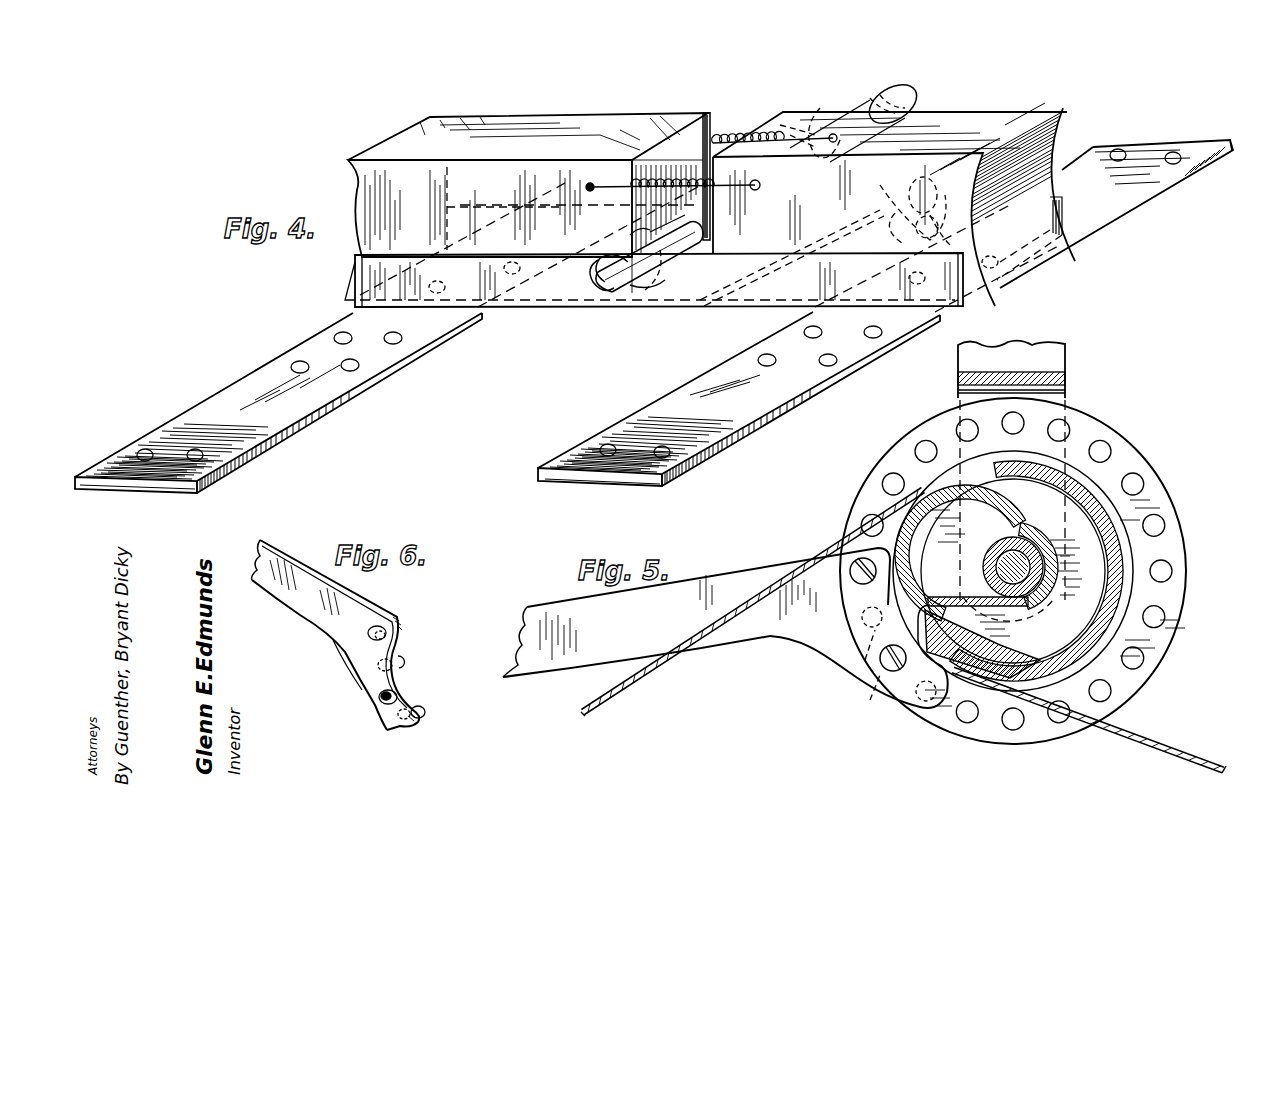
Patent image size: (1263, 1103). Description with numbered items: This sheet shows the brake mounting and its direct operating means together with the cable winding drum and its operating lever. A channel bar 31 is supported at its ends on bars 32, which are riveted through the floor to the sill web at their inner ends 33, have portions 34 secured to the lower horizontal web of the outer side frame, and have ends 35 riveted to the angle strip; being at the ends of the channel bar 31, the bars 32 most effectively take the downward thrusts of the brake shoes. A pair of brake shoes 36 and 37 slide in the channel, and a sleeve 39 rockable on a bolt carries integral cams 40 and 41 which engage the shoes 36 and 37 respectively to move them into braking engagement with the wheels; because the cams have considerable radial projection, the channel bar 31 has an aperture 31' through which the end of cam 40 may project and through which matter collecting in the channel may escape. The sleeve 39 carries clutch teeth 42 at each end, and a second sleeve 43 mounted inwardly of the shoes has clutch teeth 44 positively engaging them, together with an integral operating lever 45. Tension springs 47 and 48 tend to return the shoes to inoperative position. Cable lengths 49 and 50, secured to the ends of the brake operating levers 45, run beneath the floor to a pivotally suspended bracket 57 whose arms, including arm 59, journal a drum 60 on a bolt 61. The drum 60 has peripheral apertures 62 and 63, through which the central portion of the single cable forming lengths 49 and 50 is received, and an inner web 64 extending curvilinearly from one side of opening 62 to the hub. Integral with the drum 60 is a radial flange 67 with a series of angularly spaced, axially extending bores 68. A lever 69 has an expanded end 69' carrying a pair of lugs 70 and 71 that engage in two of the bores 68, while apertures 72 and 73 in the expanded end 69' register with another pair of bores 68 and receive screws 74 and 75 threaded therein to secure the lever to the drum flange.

In FIG. 4, the channel bar 31 is at (702, 254).
In FIG. 4, the aperture 31' is at (891, 270).
In FIG. 4, the bars 32 is at (368, 382).
In FIG. 4, the inner ends of bars 33 is at (1122, 145).
In FIG. 4, the portions of bars 34 is at (335, 352).
In FIG. 4, the ends of bars 35 is at (128, 458).
In FIG. 4, the brake shoe 36 is at (562, 120).
In FIG. 4, the brake shoe 37 is at (1017, 122).
In FIG. 4, the sleeve 39 is at (640, 248).
In FIG. 4, the cam 40 is at (672, 300).
In FIG. 4, the cam 41 is at (697, 168).
In FIG. 4, the clutch teeth 42 is at (612, 292).
In FIG. 4, the sleeve 43 is at (880, 92).
In FIG. 4, the clutch teeth 44 is at (816, 110).
In FIG. 4, the operating lever 45 is at (926, 181).
In FIG. 4, the tension spring 47 is at (640, 172).
In FIG. 4, the tension spring 48 is at (723, 140).
In FIG. 5, the cable length 49 is at (634, 682).
In FIG. 4, the cable length 50 is at (840, 244).
In FIG. 5, the cable length 50 is at (1165, 746).
In FIG. 5, the bracket 57 is at (1063, 367).
In FIG. 5, the arm 59 is at (962, 400).
In FIG. 5, the drum 60 is at (1087, 492).
In FIG. 5, the bolt 61 is at (1030, 600).
In FIG. 5, the peripheral aperture 62 is at (968, 470).
In FIG. 5, the peripheral aperture 63 is at (918, 598).
In FIG. 5, the inner web 64 is at (996, 503).
In FIG. 5, the radial flange 67 is at (1098, 422).
In FIG. 5, the bores 68 is at (1158, 520).
In FIG. 5, the lever 69 is at (696, 612).
In FIG. 6, the lever 69 is at (336, 635).
In FIG. 5, the expanded end 69' is at (861, 672).
In FIG. 6, the expanded end 69' is at (349, 685).
In FIG. 5, the lug 70 is at (858, 670).
In FIG. 6, the lug 70 is at (406, 658).
In FIG. 5, the lug 71 is at (924, 703).
In FIG. 6, the lug 71 is at (427, 710).
In FIG. 6, the aperture 72 is at (393, 620).
In FIG. 6, the aperture 73 is at (384, 705).
In FIG. 5, the screw 74 is at (853, 582).
In FIG. 5, the screw 75 is at (888, 670).